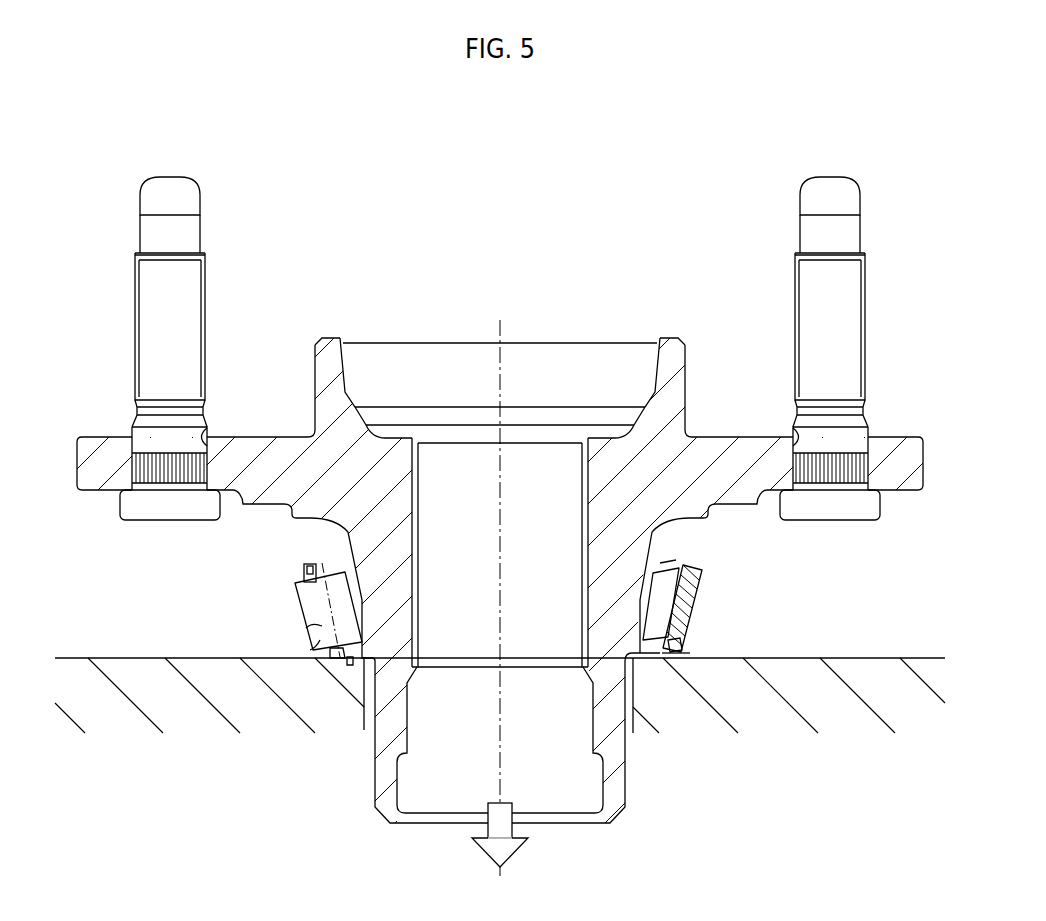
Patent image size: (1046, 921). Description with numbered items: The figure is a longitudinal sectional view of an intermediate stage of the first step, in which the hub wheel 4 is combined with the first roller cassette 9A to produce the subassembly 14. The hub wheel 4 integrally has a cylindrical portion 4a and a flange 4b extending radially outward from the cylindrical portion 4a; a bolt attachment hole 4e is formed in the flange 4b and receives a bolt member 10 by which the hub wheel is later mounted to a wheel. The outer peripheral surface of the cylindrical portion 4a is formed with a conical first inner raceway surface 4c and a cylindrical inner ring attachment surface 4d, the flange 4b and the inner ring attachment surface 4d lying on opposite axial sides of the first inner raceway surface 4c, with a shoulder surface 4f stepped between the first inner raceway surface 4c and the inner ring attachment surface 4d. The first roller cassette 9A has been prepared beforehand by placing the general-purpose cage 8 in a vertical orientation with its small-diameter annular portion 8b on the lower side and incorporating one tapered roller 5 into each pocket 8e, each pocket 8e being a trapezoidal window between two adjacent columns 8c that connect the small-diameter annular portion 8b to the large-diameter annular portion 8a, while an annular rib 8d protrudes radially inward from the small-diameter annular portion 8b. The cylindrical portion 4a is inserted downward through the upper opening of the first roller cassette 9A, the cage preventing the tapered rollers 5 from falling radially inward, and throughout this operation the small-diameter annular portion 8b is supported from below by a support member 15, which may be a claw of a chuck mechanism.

The hub wheel 4 is at (323, 331).
The cylindrical portion 4a is at (397, 495).
The flange 4b is at (907, 453).
The first inner raceway surface 4c is at (653, 553).
The inner ring attachment surface 4d is at (377, 707).
The bolt attachment hole 4e is at (203, 425).
The shoulder surface 4f is at (618, 680).
The tapered roller 5 is at (308, 603).
The general-purpose cage 8 is at (702, 597).
The large-diameter annular portion 8a is at (302, 568).
The small-diameter annular portion 8b is at (333, 657).
The column 8c is at (695, 625).
The annular rib 8d is at (348, 660).
The pocket 8e is at (318, 630).
The first roller cassette 9A is at (690, 661).
The bolt member 10 is at (160, 321).
The subassembly 14 is at (670, 319).
The support member 15 is at (833, 716).